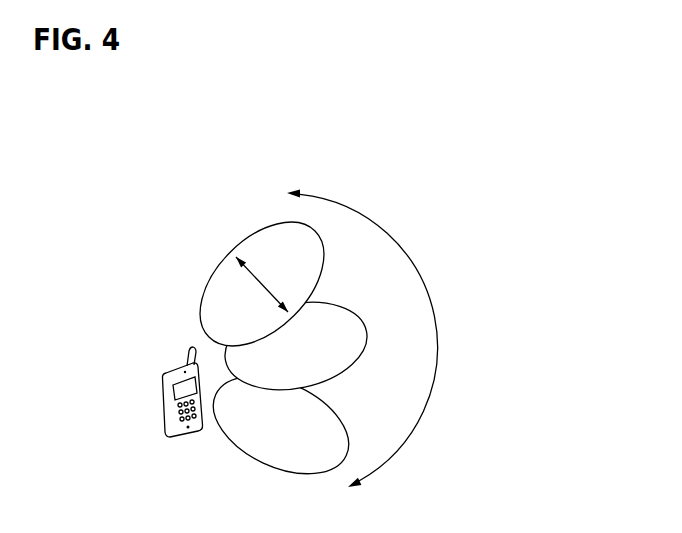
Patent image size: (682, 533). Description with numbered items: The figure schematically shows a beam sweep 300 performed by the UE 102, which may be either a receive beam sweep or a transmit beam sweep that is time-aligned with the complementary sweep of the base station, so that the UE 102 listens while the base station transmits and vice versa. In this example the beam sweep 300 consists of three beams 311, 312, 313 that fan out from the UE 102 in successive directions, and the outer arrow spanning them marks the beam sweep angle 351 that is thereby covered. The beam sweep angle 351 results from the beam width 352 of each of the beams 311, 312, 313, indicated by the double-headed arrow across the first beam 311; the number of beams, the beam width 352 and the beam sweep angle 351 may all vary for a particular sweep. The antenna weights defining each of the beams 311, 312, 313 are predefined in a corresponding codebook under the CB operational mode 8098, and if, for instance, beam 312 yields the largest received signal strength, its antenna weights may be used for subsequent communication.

The CB operational mode 8098 is at (590, 100).
The beam sweep 300 is at (506, 156).
The beam 311 is at (264, 228).
The beam 312 is at (348, 312).
The beam 313 is at (315, 464).
The beam sweep angle 351 is at (360, 209).
The beam width 352 is at (276, 293).
The UE 102 is at (180, 438).